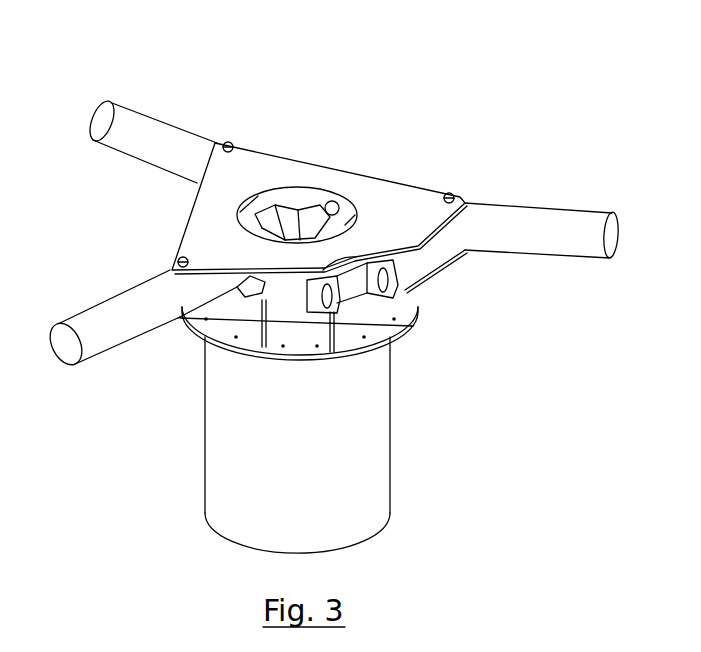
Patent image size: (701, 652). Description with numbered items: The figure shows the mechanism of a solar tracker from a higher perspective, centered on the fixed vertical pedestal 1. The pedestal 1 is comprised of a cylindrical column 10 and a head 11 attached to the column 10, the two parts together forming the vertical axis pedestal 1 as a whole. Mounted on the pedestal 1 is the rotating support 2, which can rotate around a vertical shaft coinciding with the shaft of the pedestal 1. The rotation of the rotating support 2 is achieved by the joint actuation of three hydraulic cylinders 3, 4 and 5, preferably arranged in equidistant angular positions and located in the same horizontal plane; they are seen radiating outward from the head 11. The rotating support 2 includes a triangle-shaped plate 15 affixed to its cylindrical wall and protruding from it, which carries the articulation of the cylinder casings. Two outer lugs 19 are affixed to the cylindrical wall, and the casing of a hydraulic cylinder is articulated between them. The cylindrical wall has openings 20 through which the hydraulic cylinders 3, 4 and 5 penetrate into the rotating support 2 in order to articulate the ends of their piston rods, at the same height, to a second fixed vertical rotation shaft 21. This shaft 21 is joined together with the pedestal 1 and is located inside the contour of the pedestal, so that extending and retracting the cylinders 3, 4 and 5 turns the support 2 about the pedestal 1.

The vertical pedestal 1 is at (181, 487).
The rotating support 2 is at (462, 284).
The hydraulic cylinder 3 is at (563, 233).
The hydraulic cylinder 4 is at (157, 138).
The hydraulic cylinder 5 is at (107, 318).
The cylindrical column 10 is at (370, 460).
The head 11 is at (416, 205).
The triangle-shaped parallel plate 15 is at (257, 308).
The outer lugs 19 is at (340, 300).
The opening 20 is at (243, 290).
The second fixed vertical rotation shaft 21 is at (330, 205).